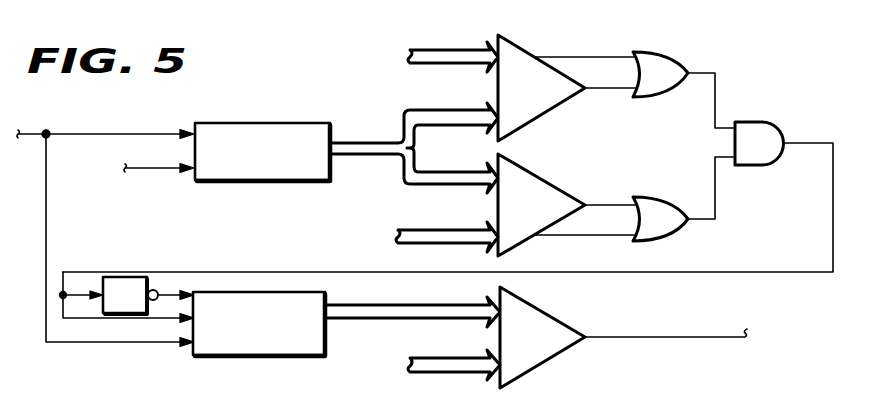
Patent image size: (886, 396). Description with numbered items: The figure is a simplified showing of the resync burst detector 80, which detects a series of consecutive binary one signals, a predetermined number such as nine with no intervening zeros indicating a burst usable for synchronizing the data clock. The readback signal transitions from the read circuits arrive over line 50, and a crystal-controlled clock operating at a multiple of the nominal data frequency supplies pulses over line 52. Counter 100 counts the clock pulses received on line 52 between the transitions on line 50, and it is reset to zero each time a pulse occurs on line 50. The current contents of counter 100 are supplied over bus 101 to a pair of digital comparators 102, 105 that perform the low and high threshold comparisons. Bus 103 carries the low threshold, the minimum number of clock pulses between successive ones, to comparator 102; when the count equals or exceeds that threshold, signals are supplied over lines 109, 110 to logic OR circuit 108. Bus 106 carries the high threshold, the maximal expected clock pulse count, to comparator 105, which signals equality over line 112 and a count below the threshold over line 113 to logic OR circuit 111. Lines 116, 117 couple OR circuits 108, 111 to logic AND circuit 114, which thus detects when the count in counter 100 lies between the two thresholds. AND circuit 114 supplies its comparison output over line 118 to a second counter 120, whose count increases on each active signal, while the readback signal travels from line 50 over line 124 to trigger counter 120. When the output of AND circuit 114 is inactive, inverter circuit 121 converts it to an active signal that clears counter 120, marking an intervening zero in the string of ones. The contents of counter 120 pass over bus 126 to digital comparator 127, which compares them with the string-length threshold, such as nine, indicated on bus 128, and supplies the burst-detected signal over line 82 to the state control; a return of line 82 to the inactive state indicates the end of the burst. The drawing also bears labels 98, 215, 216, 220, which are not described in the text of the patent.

The line 50 is at (128, 104).
The line 52 is at (151, 170).
The resync burst detector 80 is at (355, 220).
The line 82 is at (692, 312).
The comparator logic circuit 98 is at (834, 78).
The counter 100 is at (283, 96).
The bus 101 is at (362, 132).
The digital comparator 102 is at (522, 20).
The bus 103 is at (456, 24).
The digital comparator 105 is at (540, 156).
The bus 106 is at (449, 209).
The logic OR circuit 108 is at (665, 51).
The line 109 is at (617, 24).
The line 110 is at (610, 88).
The logic OR circuit 111 is at (681, 234).
The line 112 is at (636, 160).
The line 113 is at (581, 236).
The logic AND circuit 114 is at (765, 119).
The line 116 is at (715, 96).
The line 117 is at (742, 196).
The line 118 is at (792, 253).
The second counter 120 is at (327, 345).
The inverter circuit 121 is at (138, 277).
The line 124 is at (70, 215).
The bus 126 is at (432, 289).
The digital comparator 127 is at (560, 287).
The bus 128 is at (455, 339).
The element 215 is at (130, 395).
The element 216 is at (180, 387).
The element 220 is at (212, 395).